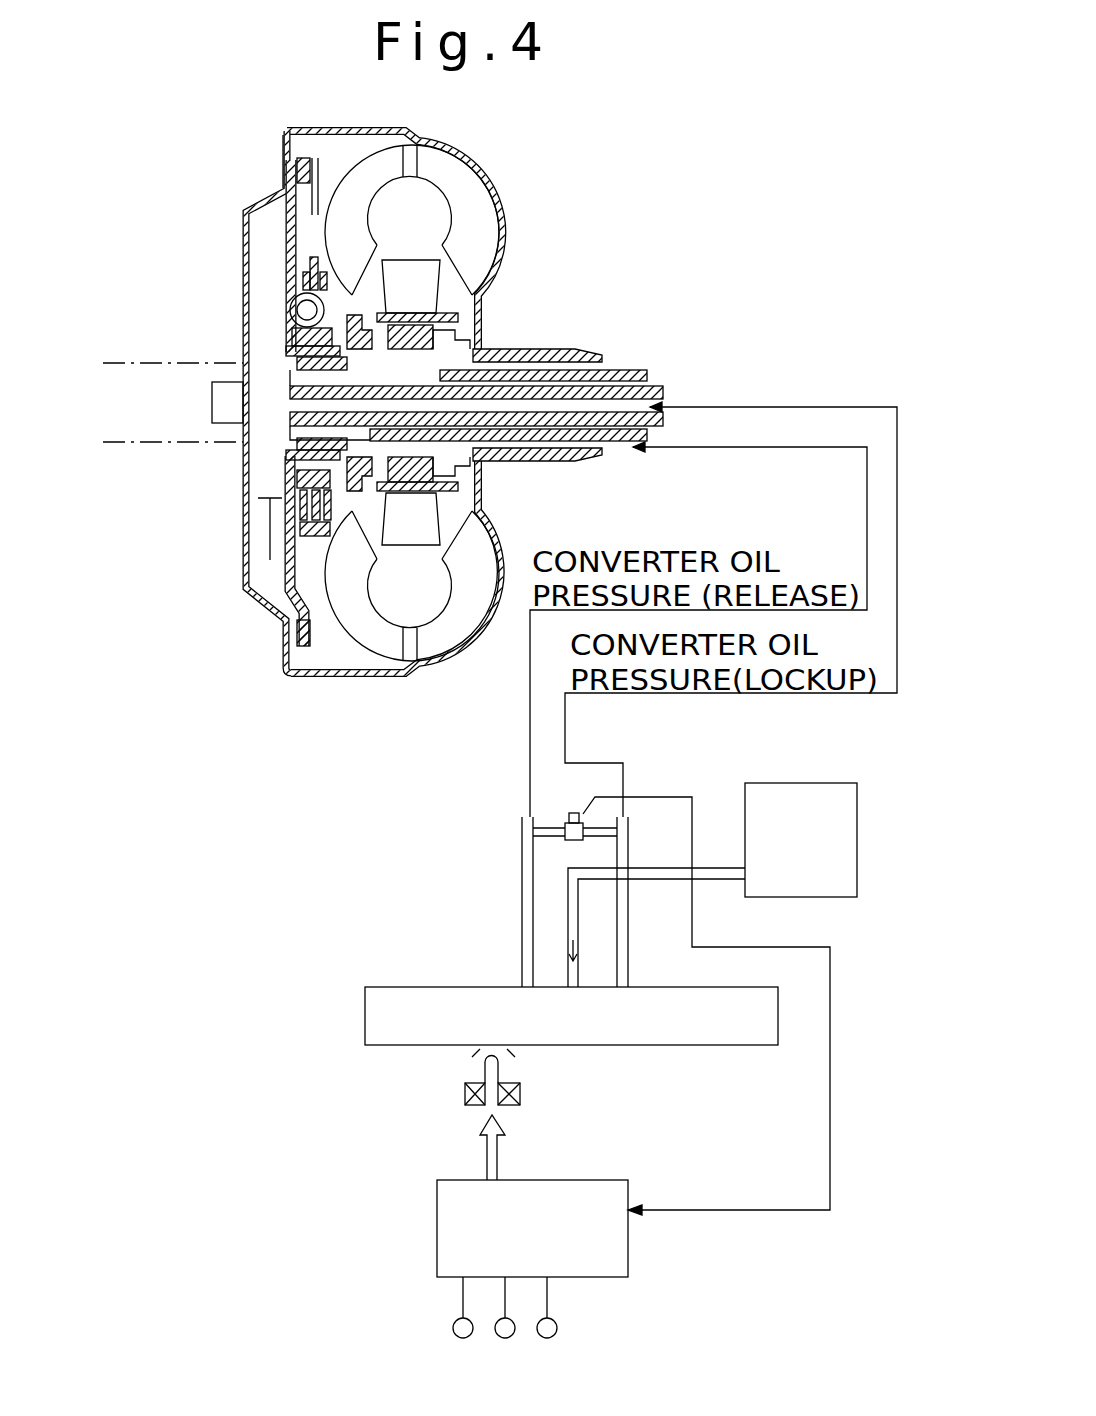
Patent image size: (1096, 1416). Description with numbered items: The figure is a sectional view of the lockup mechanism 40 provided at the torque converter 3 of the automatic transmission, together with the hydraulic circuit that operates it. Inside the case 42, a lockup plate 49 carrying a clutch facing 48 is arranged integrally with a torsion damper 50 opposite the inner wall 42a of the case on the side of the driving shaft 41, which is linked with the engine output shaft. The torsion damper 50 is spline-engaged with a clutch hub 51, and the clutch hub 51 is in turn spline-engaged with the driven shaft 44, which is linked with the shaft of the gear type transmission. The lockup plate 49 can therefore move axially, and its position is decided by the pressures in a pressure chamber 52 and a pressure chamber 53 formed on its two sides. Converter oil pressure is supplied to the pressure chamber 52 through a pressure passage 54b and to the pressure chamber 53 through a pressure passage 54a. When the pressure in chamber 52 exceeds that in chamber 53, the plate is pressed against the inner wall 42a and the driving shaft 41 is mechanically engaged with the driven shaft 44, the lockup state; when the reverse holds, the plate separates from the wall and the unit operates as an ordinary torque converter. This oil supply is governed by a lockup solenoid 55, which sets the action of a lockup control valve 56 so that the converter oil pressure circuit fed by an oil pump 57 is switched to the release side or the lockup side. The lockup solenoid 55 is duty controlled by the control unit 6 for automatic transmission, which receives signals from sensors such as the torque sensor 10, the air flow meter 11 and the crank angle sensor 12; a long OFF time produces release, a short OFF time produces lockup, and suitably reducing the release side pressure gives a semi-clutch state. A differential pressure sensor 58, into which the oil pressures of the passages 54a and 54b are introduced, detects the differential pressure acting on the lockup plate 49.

The torque converter 3 is at (508, 164).
The control unit for automatic transmission 6 is at (437, 1200).
The torque sensor 10 is at (455, 1336).
The air flow meter 11 is at (507, 1338).
The crank angle sensor 12 is at (555, 1336).
The lockup mechanism 40 is at (249, 614).
The driving shaft 41 is at (160, 362).
The case 42 is at (243, 216).
The inner wall 42a is at (283, 134).
The driven shaft 44 is at (613, 386).
The clutch facing 48 is at (292, 170).
The lockup plate 49 is at (318, 160).
The torsion damper 50 is at (290, 305).
The clutch hub 51 is at (287, 368).
The pressure chamber 52 is at (357, 660).
The pressure chamber 53 is at (258, 500).
The pressure passage 54a is at (612, 410).
The pressure passage 54b is at (527, 445).
The lockup solenoid 55 is at (520, 1097).
The lockup control valve 56 is at (720, 1047).
The oil pump 57 is at (765, 898).
The differential pressure sensor 58 is at (571, 814).